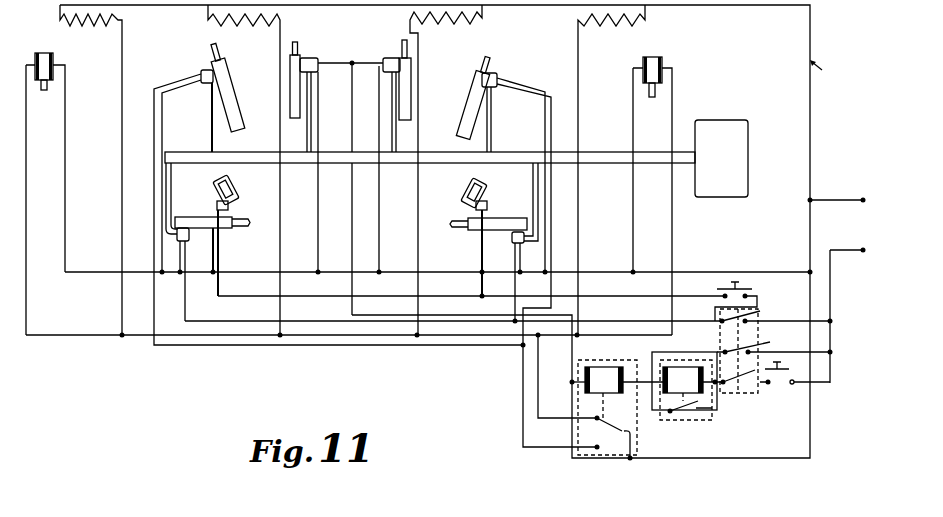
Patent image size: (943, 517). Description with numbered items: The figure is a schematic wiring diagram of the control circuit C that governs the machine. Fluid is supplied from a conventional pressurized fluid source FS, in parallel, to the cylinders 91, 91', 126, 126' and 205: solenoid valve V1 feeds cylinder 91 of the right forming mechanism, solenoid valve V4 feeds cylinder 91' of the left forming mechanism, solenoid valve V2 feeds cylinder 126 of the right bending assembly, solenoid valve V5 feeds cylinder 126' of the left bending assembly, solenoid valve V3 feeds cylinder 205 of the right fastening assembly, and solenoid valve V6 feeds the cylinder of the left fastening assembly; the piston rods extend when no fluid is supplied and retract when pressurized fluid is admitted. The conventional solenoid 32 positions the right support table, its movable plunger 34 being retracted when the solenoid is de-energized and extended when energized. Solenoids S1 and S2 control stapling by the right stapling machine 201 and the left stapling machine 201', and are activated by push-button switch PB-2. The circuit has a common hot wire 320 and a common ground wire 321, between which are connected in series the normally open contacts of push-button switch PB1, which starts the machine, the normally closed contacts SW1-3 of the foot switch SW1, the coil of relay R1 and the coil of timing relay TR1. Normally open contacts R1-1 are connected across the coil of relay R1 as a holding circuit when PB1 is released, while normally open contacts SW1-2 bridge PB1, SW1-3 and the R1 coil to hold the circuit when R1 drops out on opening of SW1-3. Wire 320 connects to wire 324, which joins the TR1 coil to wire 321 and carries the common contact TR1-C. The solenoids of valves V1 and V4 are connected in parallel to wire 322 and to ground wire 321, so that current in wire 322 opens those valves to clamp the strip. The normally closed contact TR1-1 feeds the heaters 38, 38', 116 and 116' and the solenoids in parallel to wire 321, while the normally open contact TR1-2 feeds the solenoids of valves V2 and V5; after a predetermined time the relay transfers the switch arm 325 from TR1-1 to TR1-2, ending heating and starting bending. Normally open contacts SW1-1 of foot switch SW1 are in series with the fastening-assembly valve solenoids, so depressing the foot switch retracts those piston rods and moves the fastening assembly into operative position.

The solenoid 32 is at (50, 47).
The movable plunger 34 is at (48, 90).
The heater 38 is at (611, 170).
The heater 38' is at (91, 170).
The heater 116 is at (446, 170).
The heater 116' is at (244, 170).
The cylinder 126 is at (462, 97).
The cylinder 126' is at (242, 87).
The cylinder 91 is at (424, 90).
The cylinder 91' is at (277, 91).
The right stapling machine 201 is at (494, 190).
The left stapling machine 201' is at (245, 186).
The cylinder 205 is at (235, 222).
The common hot wire 320 is at (837, 251).
The common ground wire 321 is at (830, 200).
The wire 322 is at (350, 176).
The wire 324 is at (797, 460).
The switch arm 325 is at (593, 422).
The solenoid valve V1 is at (394, 59).
The solenoid valve V2 is at (493, 76).
The solenoid valve V3 is at (520, 240).
The solenoid valve V4 is at (309, 61).
The solenoid valve V5 is at (204, 72).
The solenoid valve V6 is at (185, 233).
The solenoid S1 is at (486, 208).
The solenoid S2 is at (216, 199).
The pressurized fluid source FS is at (728, 171).
The control circuit C is at (822, 78).
The push-button switch PB-2 is at (727, 287).
The push-button switch PB1 is at (795, 373).
The foot switch SW1 is at (743, 395).
The normally open contacts SW1-1 is at (748, 323).
The normally open contacts SW1-2 is at (750, 352).
The normally closed contacts SW1-3 is at (745, 385).
The relay R1 is at (695, 422).
The normally open contacts R1-1 is at (713, 400).
The timing relay TR1 is at (622, 358).
The normally closed contact TR1-1 is at (595, 417).
The normally open contact TR1-2 is at (598, 450).
The common contact TR1-C is at (623, 431).